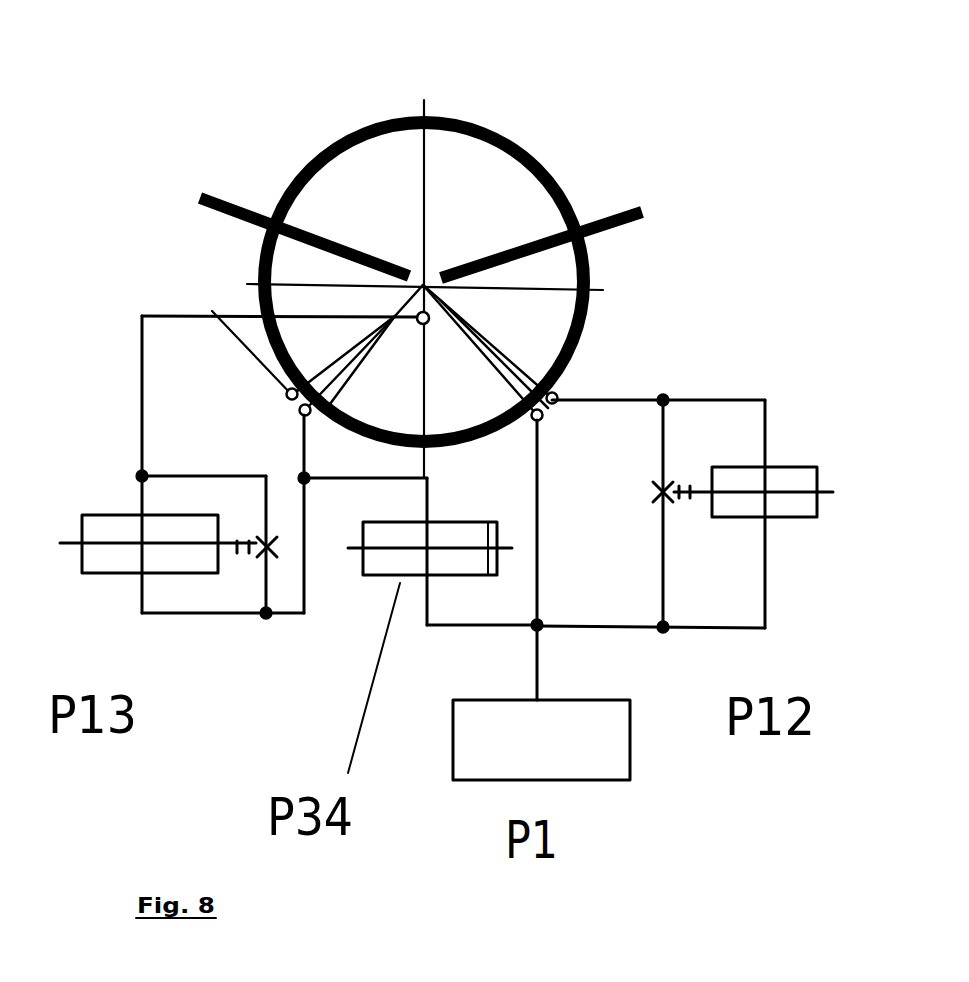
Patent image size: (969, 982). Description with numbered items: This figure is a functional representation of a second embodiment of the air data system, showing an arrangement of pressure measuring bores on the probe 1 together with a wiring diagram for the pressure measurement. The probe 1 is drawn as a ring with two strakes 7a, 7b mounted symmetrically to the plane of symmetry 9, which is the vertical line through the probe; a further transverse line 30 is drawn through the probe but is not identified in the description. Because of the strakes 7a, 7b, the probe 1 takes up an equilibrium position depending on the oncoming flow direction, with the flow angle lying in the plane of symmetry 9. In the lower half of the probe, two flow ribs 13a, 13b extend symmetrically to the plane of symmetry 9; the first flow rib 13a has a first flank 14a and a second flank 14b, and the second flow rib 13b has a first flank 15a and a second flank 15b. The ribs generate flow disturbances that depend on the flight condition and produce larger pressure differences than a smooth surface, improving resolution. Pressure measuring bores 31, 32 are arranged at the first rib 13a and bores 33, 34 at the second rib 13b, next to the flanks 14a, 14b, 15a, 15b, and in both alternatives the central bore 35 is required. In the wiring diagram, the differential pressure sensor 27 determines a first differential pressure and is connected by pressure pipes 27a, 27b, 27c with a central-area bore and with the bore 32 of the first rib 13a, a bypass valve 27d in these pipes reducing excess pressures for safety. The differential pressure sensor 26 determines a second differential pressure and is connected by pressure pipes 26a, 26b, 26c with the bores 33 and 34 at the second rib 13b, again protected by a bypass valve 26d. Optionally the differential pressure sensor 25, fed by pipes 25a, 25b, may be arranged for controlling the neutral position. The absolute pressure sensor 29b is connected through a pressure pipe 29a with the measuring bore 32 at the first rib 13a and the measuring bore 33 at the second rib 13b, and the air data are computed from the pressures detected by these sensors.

The probe 1 is at (512, 140).
The plane of symmetry 9 is at (424, 100).
The horizontal axis 30 is at (607, 286).
The strake 7a is at (226, 195).
The strake 7b is at (620, 207).
The bore 35 is at (417, 328).
The first flank 14a is at (212, 311).
The second flank 14b is at (345, 415).
The first flank 15a is at (485, 351).
The second flank 15b is at (498, 350).
The first flow rib 13a is at (299, 413).
The second flow rib 13b is at (556, 405).
The pressure measuring bore 31 is at (286, 392).
The pressure measuring bore 32 is at (309, 417).
The pressure measuring bore 33 is at (533, 420).
The pressure measuring bore 34 is at (563, 387).
The differential pressure sensor 27 is at (92, 565).
The left cylinder supply line 27a is at (139, 500).
The left cylinder return line 27b is at (202, 614).
The left cylinder branch line 27c is at (193, 475).
The bypass valve 27d is at (269, 553).
The differential pressure sensor 25 is at (380, 578).
The middle cylinder lower line 25a is at (442, 627).
The middle cylinder upper line 25b is at (432, 498).
The differential pressure sensor 26 is at (792, 477).
The right cylinder upper line 26a is at (720, 402).
The right cylinder lower line 26b is at (742, 627).
The right cylinder branch line 26c is at (670, 438).
The bypass valve 26d is at (660, 497).
The pressure supply line 29a is at (540, 677).
The absolute pressure sensor 29b is at (605, 772).